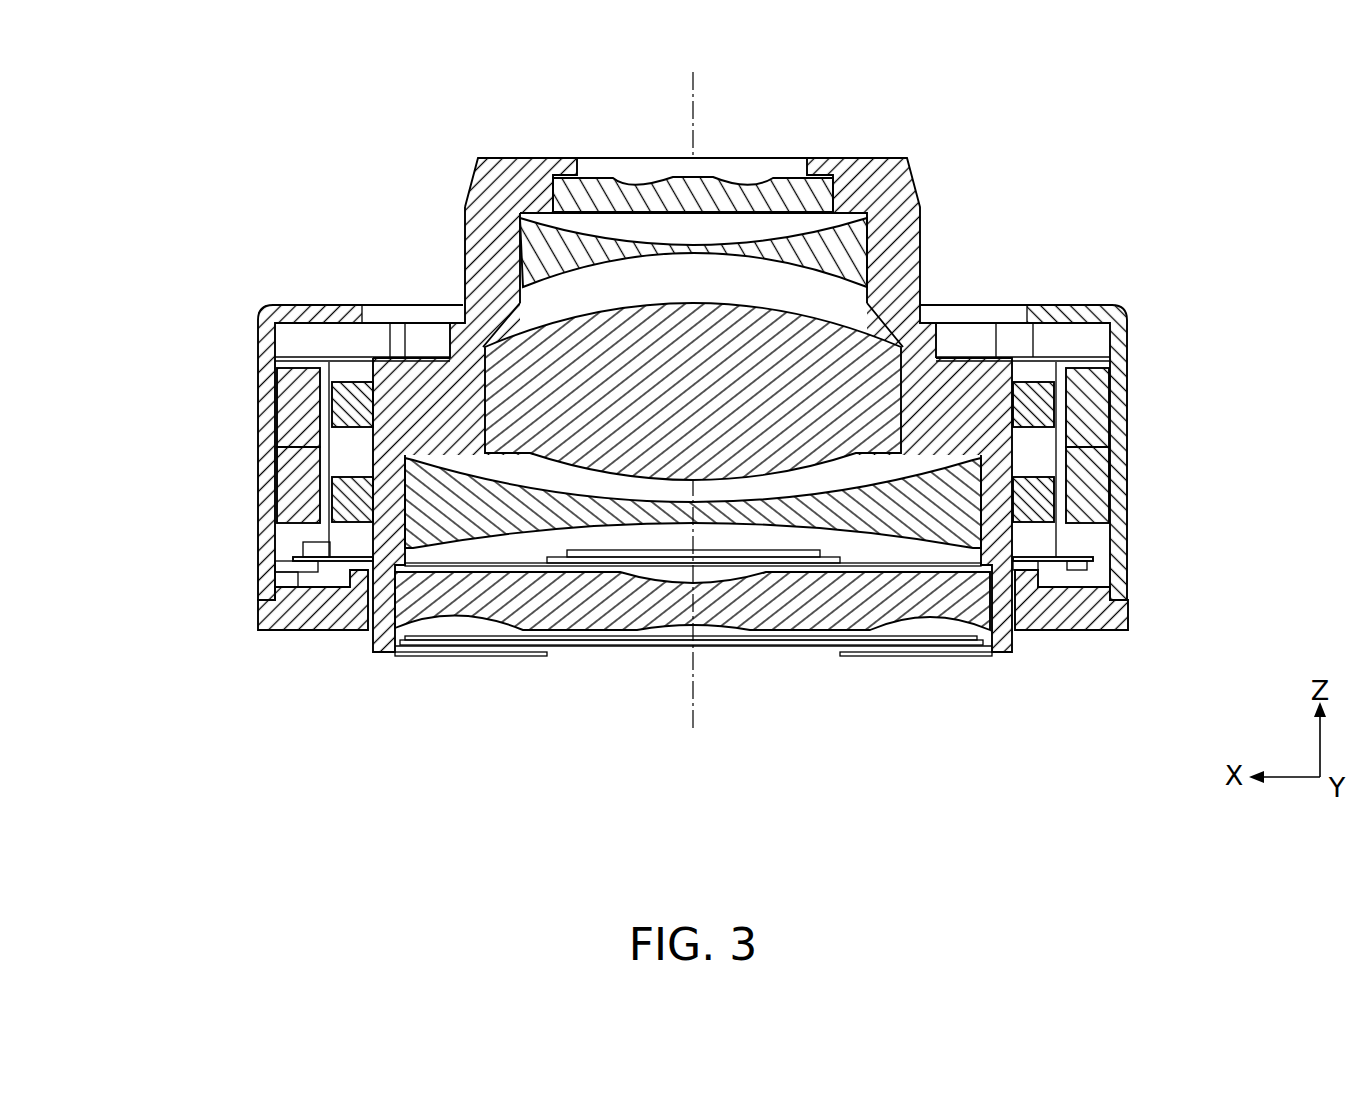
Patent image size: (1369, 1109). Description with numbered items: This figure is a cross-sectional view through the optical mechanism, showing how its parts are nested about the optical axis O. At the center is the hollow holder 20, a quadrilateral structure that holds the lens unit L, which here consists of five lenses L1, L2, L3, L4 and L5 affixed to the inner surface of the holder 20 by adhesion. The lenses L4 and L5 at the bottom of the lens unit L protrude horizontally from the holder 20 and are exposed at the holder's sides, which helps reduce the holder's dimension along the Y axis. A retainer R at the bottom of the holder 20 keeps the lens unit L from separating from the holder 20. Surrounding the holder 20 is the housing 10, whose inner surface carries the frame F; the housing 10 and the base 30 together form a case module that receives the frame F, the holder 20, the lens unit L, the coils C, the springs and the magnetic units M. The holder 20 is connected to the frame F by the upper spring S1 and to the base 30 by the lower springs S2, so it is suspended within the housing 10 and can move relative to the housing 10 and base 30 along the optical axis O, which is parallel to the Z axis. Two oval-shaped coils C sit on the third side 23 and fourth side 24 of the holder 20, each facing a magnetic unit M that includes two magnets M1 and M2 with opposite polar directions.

The optical axis O is at (691, 385).
The lens unit L is at (752, 170).
The holder 20 is at (448, 200).
The lens L1 is at (790, 195).
The lens L2 is at (820, 248).
The lens L3 is at (660, 455).
The lens L4 is at (780, 512).
The lens L5 is at (576, 620).
The housing 10 is at (290, 306).
The upper spring S1 is at (347, 390).
The frame F is at (290, 356).
The coil C is at (338, 386).
The magnet M1 is at (302, 405).
The magnet M2 is at (297, 485).
The magnetic unit M is at (693, 445).
The base 30 is at (305, 620).
The lower spring S2 is at (347, 562).
The third side 23 is at (365, 545).
The retainer R is at (430, 648).
The fourth side 24 is at (1040, 572).